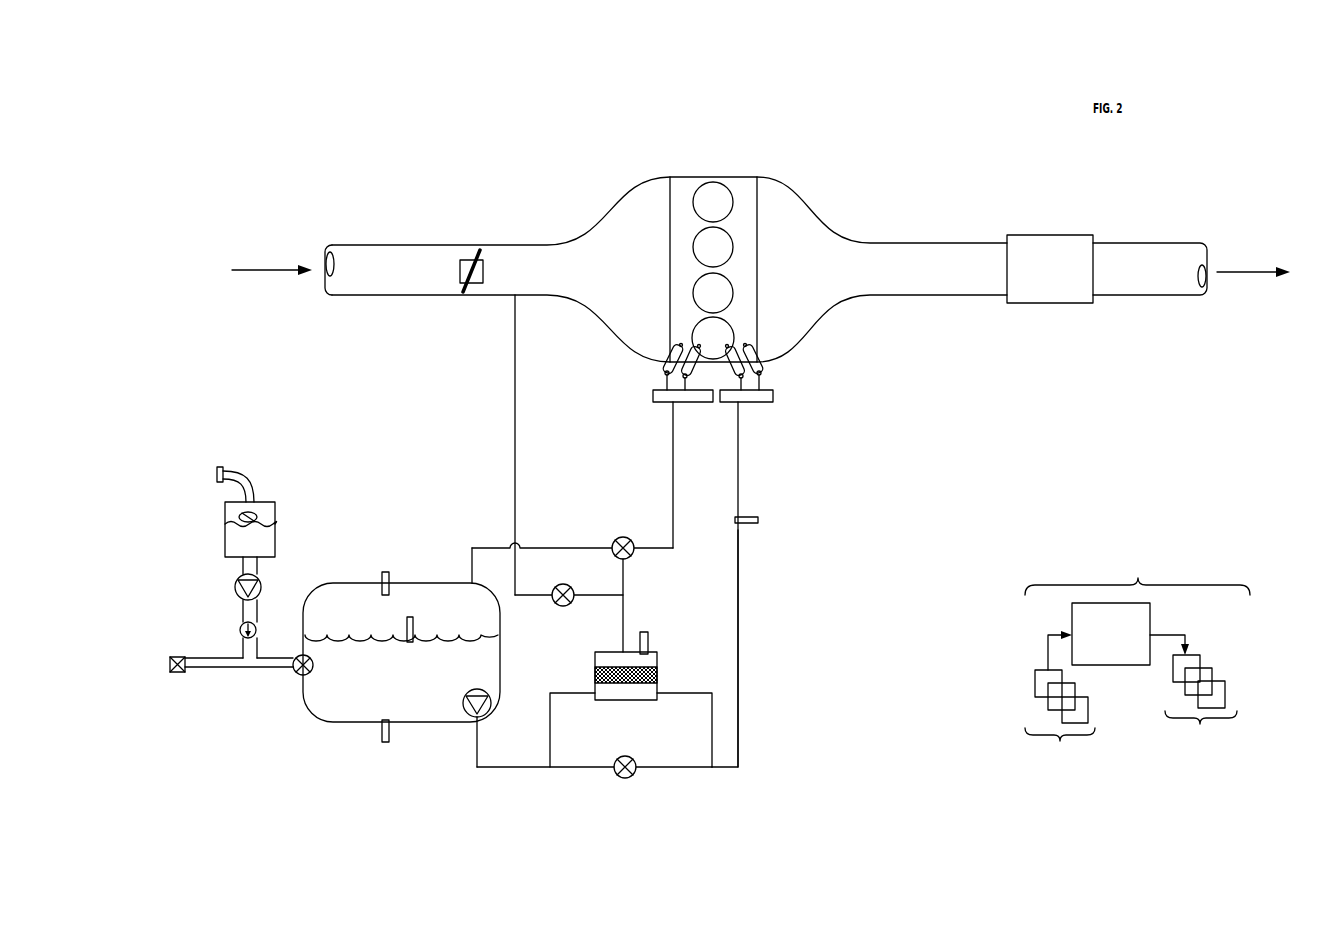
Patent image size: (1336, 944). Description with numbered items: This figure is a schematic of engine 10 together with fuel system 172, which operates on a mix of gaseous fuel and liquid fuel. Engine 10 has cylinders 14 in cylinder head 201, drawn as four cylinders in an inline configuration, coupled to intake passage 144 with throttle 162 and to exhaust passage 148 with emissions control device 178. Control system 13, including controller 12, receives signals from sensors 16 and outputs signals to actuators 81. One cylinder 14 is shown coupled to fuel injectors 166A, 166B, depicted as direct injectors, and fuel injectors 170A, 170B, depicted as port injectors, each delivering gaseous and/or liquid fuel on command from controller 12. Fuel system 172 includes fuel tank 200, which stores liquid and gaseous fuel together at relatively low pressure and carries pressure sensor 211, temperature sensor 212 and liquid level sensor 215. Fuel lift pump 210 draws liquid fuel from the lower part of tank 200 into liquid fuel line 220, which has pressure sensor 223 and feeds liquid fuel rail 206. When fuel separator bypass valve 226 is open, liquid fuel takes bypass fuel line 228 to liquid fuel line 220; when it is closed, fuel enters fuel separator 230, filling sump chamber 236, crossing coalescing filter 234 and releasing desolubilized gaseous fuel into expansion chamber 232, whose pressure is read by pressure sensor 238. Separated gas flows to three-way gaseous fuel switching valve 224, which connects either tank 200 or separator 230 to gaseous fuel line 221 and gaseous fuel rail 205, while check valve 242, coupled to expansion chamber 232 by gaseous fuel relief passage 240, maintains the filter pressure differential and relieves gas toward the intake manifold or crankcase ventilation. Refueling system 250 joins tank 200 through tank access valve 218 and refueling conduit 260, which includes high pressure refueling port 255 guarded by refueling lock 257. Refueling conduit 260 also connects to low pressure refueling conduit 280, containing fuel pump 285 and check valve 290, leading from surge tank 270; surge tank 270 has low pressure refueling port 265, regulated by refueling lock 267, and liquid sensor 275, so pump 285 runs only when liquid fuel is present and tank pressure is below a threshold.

The engine 10 is at (865, 145).
The controller 12 is at (1111, 634).
The control system 13 is at (1137, 657).
The cylinders 14 is at (729, 337).
The sensors 16 is at (1060, 703).
The actuators 81 is at (1193, 697).
The intake passage 144 is at (440, 280).
The exhaust passage 148 is at (840, 280).
The throttle 162 is at (483, 276).
The fuel injector 166A is at (662, 369).
The fuel injector 166B is at (764, 369).
The fuel injector 170A is at (662, 392).
The fuel injector 170B is at (775, 392).
The fuel system 172 is at (466, 398).
The emissions control device 178 is at (1062, 280).
The fuel tank 200 is at (310, 720).
The cylinder head 201 is at (757, 254).
The gaseous fuel rail 205 is at (668, 406).
The liquid fuel rail 206 is at (762, 404).
The fuel lift pump 210 is at (470, 718).
The pressure sensor 211 is at (383, 572).
The temperature sensor 212 is at (381, 737).
The liquid level sensor 215 is at (413, 622).
The tank access valve 218 is at (296, 672).
The liquid fuel line 220 is at (741, 572).
The gaseous fuel line 221 is at (673, 492).
The pressure sensor 223 is at (752, 514).
The three-way gaseous fuel switching valve 224 is at (615, 538).
The fuel separator bypass valve 226 is at (622, 757).
The bypass fuel line 228 is at (700, 766).
The fuel separator 230 is at (637, 660).
The expansion chamber 232 is at (660, 658).
The coalescing filter 234 is at (660, 676).
The sump chamber 236 is at (632, 693).
The pressure sensor 238 is at (646, 630).
The gaseous fuel relief passage 240 is at (517, 475).
The check valve 242 is at (573, 589).
The refueling system 250 is at (198, 457).
The high pressure refueling port 255 is at (186, 658).
The refueling lock 257 is at (172, 673).
The refueling conduit 260 is at (216, 668).
The low pressure refueling port 265 is at (224, 472).
The refueling lock 267 is at (218, 484).
The surge tank 270 is at (226, 555).
The liquid sensor 275 is at (258, 520).
The low pressure refueling conduit 280 is at (243, 612).
The fuel pump 285 is at (261, 585).
The check valve 290 is at (256, 631).